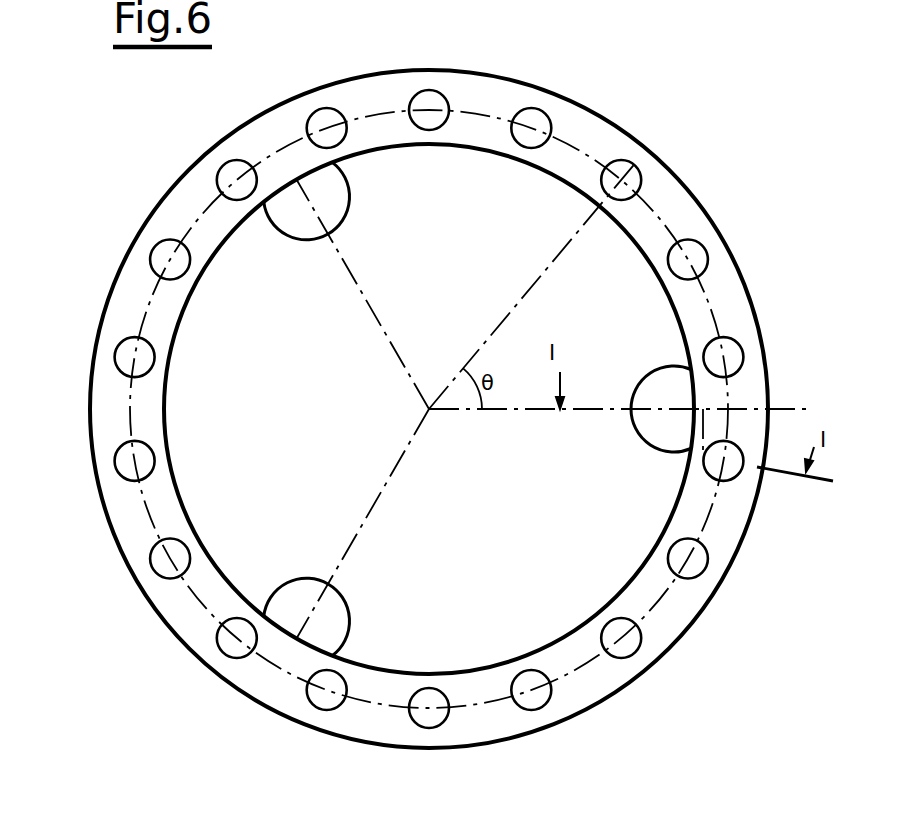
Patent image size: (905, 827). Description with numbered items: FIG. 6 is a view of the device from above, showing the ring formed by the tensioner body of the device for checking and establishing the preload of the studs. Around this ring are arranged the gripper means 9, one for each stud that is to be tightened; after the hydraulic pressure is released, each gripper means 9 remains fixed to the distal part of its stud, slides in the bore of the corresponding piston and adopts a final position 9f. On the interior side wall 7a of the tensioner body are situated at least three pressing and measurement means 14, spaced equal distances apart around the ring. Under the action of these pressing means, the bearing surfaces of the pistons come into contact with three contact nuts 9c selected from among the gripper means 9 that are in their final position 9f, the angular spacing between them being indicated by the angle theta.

The interior side wall 7a is at (393, 152).
The gripper means 9 is at (225, 168).
The contact nuts 9c is at (635, 175).
The final position of the gripper means 9f is at (742, 450).
The pressing and measurement means 14 is at (335, 230).